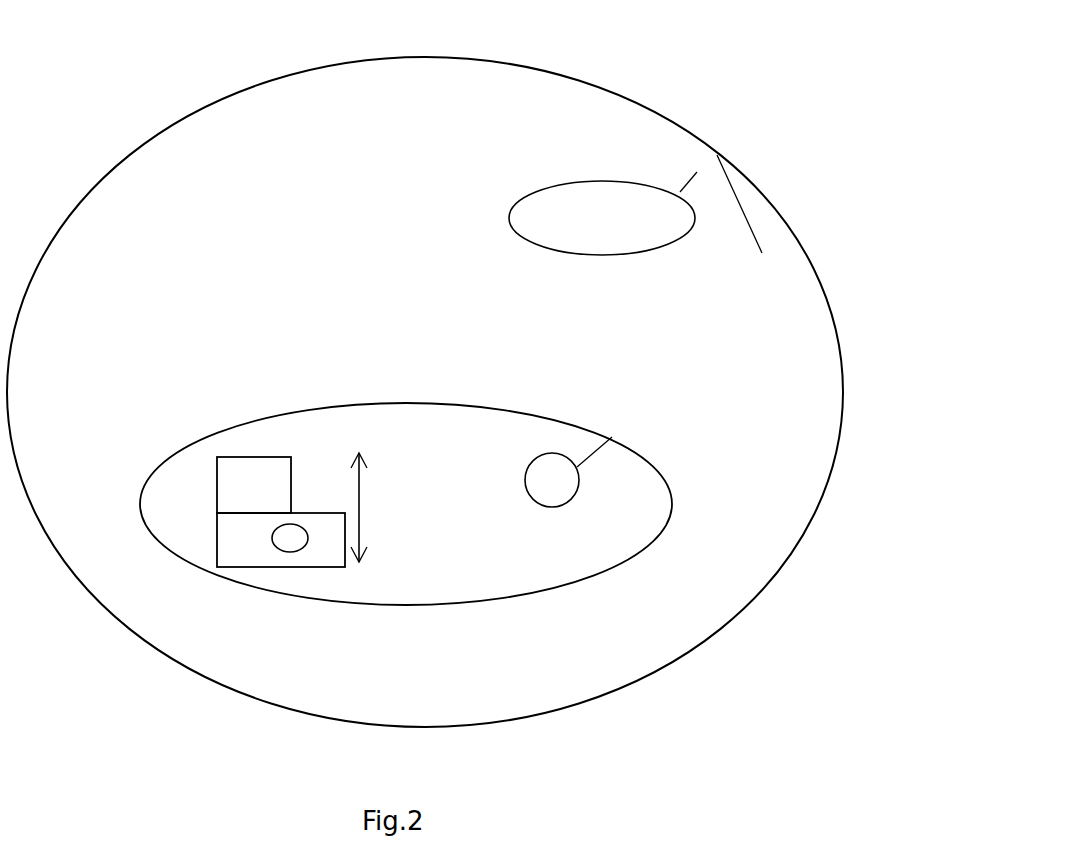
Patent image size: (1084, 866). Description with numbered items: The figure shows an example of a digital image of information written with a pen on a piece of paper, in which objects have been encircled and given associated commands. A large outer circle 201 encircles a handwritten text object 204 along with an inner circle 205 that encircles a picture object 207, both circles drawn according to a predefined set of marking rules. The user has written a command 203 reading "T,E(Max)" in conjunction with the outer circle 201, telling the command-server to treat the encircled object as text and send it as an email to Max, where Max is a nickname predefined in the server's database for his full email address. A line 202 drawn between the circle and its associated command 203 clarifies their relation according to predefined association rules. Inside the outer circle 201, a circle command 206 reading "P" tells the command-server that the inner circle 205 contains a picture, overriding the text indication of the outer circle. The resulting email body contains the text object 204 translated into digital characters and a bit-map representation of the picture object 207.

The outer circle 201 is at (425, 379).
The line 202 is at (762, 253).
The command 203 is at (661, 170).
The text object 204 is at (301, 232).
The inner circle 205 is at (406, 481).
The circle command 206 is at (610, 452).
The picture object 207 is at (337, 463).